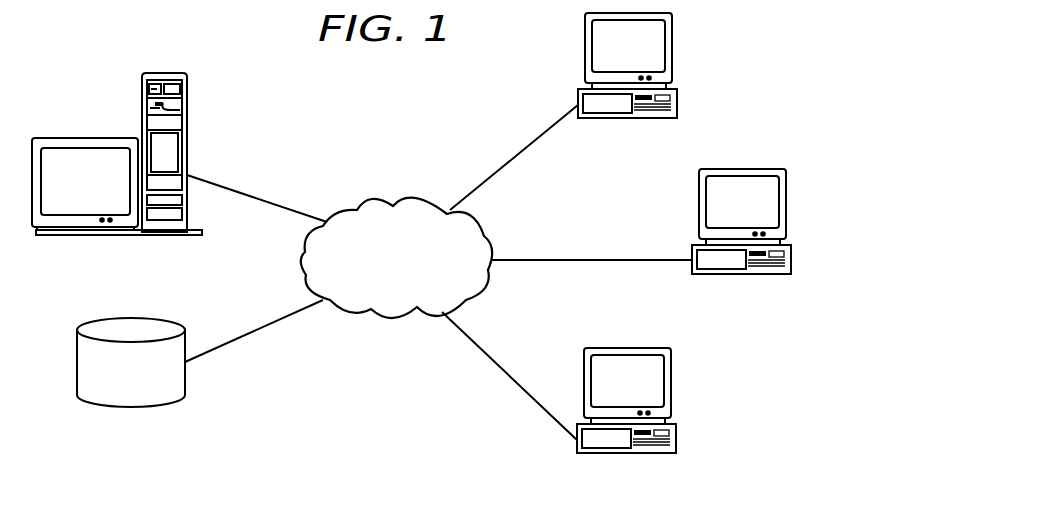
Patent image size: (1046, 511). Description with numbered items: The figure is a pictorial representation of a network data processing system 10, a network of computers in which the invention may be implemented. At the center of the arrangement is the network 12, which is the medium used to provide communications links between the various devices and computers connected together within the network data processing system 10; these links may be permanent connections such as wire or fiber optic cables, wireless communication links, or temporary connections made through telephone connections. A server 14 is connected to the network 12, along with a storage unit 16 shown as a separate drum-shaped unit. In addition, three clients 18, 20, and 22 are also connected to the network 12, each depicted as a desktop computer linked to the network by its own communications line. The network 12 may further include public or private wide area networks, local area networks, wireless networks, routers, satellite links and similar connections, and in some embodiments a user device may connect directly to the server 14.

The network data processing system 10 is at (250, 62).
The network 12 is at (411, 287).
The server 14 is at (142, 95).
The storage unit 16 is at (77, 362).
The client 18 is at (672, 55).
The client 20 is at (763, 238).
The client 22 is at (651, 417).